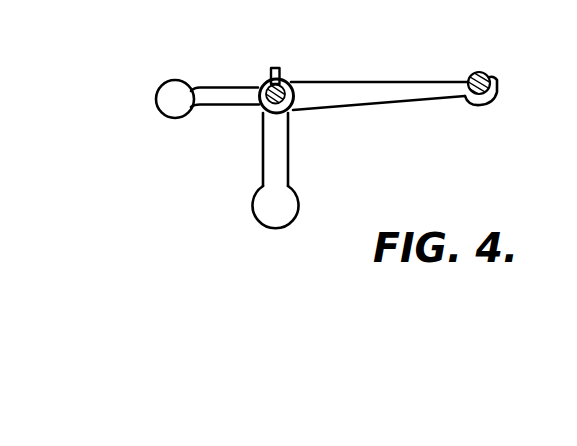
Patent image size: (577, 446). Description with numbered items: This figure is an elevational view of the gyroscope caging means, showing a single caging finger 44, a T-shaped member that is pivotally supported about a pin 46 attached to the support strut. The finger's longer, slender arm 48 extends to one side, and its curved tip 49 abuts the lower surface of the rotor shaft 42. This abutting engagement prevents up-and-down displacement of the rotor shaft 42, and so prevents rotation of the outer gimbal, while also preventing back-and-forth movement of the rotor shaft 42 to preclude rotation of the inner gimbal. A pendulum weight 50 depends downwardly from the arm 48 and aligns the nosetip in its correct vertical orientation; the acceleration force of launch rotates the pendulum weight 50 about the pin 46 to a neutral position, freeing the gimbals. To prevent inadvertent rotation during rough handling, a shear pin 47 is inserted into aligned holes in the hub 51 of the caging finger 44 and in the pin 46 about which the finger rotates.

The rotor shaft 42 is at (489, 72).
The caging finger 44 is at (196, 154).
The pin 46 is at (258, 110).
The shear pin 47 is at (280, 72).
The arm 48 is at (387, 82).
The curved tip 49 is at (493, 97).
The pendulum weight 50 is at (257, 198).
The hub 51 is at (295, 111).